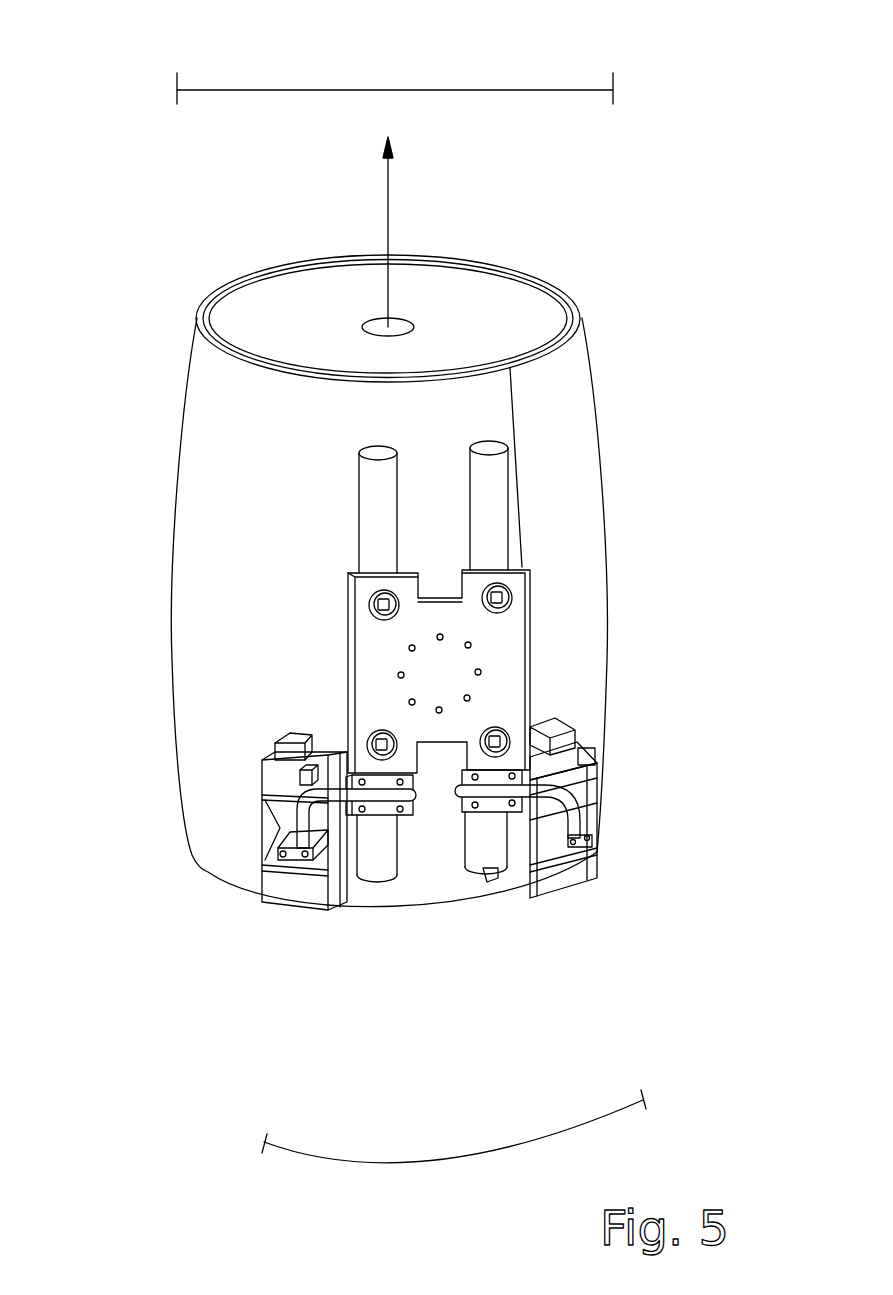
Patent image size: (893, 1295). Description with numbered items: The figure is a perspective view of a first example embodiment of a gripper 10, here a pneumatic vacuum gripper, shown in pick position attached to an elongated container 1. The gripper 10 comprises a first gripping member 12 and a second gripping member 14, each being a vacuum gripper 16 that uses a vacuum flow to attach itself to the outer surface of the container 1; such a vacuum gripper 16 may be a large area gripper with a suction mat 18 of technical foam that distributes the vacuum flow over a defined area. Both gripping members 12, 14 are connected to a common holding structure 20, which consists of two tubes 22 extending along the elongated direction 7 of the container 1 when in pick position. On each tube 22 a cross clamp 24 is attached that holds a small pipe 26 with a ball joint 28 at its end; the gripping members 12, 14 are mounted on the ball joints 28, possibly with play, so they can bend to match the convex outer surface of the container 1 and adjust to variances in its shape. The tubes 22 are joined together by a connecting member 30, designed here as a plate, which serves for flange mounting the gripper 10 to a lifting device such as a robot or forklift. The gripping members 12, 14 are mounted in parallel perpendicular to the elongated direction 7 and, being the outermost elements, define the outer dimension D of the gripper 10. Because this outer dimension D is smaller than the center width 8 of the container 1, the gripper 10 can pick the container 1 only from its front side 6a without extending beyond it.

The elongated container 1 is at (436, 223).
The front side 6a is at (207, 605).
The elongated direction 7 is at (388, 199).
The center width 8 is at (491, 89).
The gripper 10 is at (566, 563).
The first gripping member 12 is at (293, 921).
The second gripping member 14 is at (558, 911).
The vacuum gripper 16 is at (308, 893).
The suction mat 18 is at (356, 882).
The holding structure 20 is at (450, 471).
The tubes 22 is at (373, 502).
The cross clamp 24 is at (495, 805).
The small pipe 26 is at (573, 800).
The ball joint 28 is at (595, 838).
The connecting member 30 is at (512, 653).
The outer dimension D is at (446, 1161).